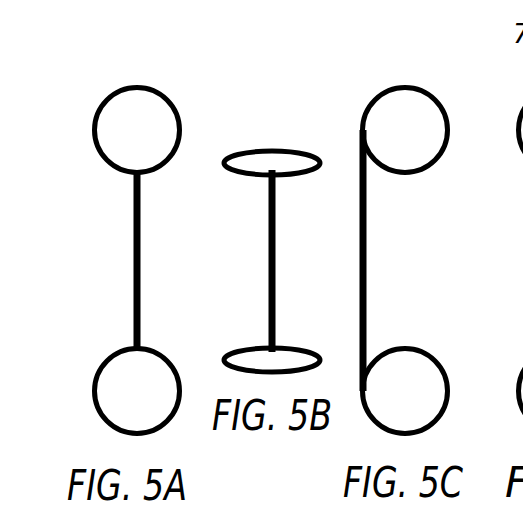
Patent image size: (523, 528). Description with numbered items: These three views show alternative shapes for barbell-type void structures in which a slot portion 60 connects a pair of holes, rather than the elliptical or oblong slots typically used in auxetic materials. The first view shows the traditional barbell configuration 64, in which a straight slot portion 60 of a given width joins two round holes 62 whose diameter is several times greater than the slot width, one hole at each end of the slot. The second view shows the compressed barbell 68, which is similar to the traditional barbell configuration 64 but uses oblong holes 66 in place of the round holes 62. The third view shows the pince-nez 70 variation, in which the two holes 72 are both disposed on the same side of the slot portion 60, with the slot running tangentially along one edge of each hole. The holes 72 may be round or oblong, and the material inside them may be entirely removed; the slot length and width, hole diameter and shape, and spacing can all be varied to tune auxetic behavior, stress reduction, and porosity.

In FIG. 5A, the slot portion 60 is at (133, 240).
In FIG. 5B, the slot portion 60 is at (268, 250).
In FIG. 5C, the slot portion 60 is at (360, 268).
In FIG. 5A, the round holes 62 is at (104, 96).
In FIG. 5A, the traditional barbell configuration 64 is at (101, 236).
In FIG. 5B, the oblong holes 66 is at (248, 150).
In FIG. 5B, the compressed barbell configuration 68 is at (263, 206).
In FIG. 5C, the pince-nez configuration 70 is at (397, 217).
In FIG. 5C, the holes 72 is at (393, 85).